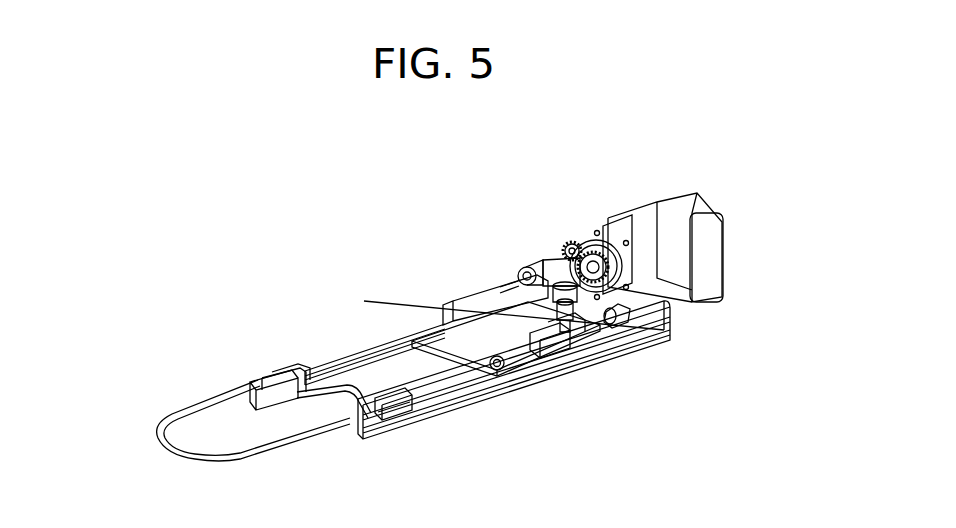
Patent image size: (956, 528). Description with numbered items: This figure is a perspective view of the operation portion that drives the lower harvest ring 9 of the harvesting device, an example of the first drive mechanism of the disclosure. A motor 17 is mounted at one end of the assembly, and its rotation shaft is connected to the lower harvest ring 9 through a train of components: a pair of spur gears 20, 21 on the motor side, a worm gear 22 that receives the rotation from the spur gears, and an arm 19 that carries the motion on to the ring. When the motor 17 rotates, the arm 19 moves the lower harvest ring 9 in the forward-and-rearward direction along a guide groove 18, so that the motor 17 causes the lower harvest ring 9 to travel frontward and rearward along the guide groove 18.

The lower harvest ring 9 is at (165, 416).
The motor 17 is at (706, 237).
The guide groove 18 is at (517, 309).
The arm 19 is at (523, 357).
The spur gear 20 is at (592, 256).
The spur gear 21 is at (570, 246).
The worm gear 22 is at (558, 270).